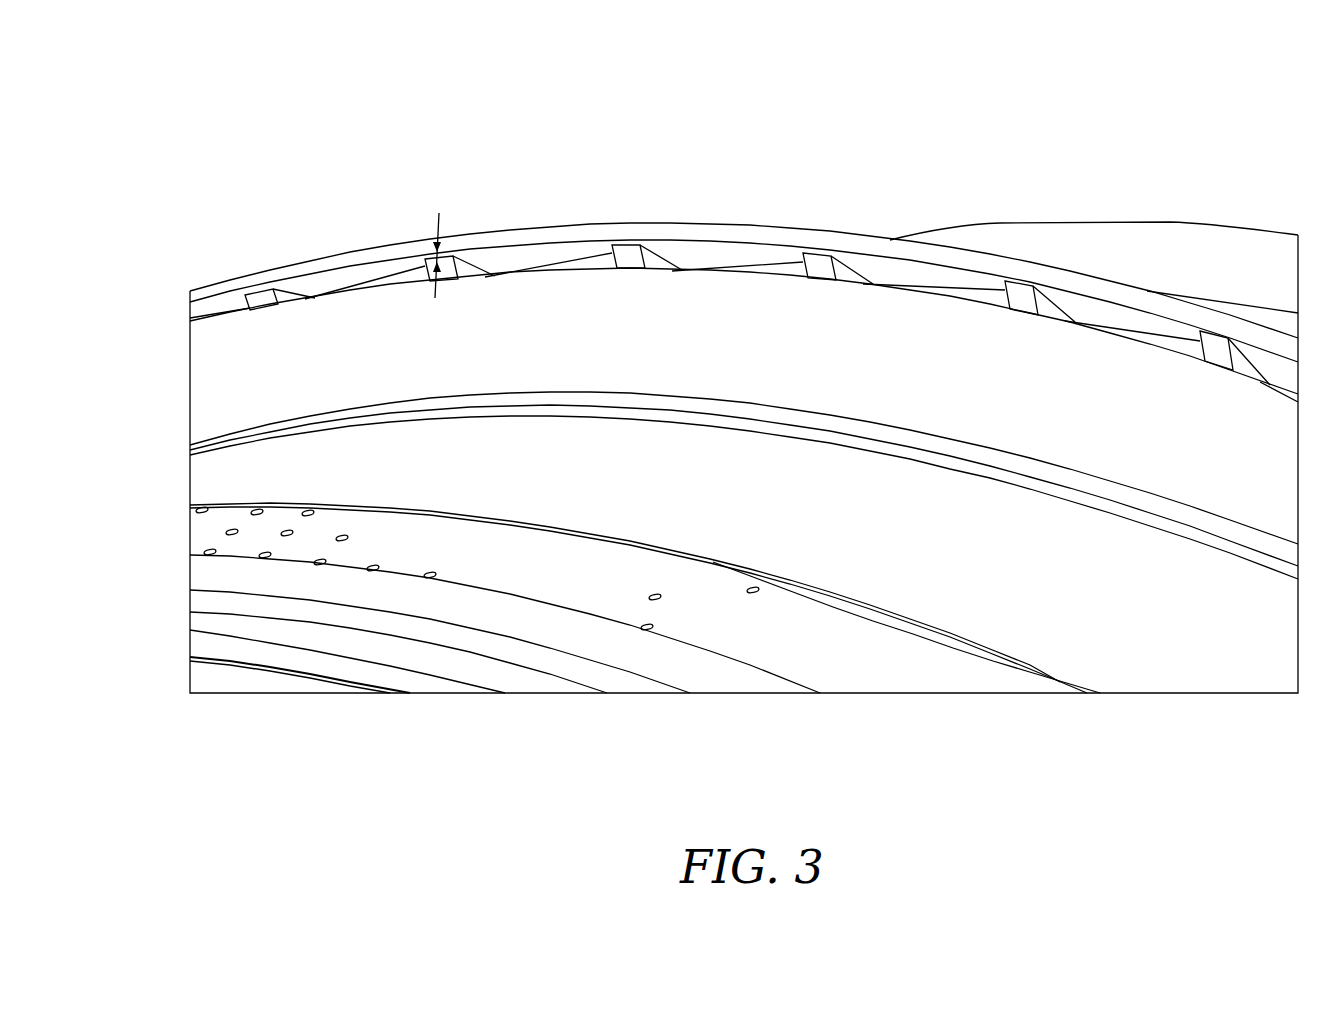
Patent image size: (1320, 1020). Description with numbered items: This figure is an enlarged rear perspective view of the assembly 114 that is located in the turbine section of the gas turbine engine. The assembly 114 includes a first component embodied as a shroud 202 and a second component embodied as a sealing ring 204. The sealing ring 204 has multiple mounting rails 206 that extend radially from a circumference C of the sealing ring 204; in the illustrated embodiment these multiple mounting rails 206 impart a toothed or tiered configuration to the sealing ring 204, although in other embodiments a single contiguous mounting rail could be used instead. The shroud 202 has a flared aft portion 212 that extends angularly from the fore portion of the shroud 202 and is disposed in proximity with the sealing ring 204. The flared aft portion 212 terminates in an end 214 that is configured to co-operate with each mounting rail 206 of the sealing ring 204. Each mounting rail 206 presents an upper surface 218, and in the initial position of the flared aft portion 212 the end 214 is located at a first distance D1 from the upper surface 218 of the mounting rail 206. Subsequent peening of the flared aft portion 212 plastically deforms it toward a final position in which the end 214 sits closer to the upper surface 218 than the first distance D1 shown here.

The assembly 114 is at (1164, 94).
The shroud 202 is at (1227, 309).
The sealing ring 204 is at (238, 372).
The mounting rails 206 is at (634, 268).
The flared aft portion 212 is at (759, 222).
The end 214 is at (703, 232).
The upper surface 218 is at (430, 257).
The circumference C is at (366, 283).
The first distance D1 is at (445, 252).